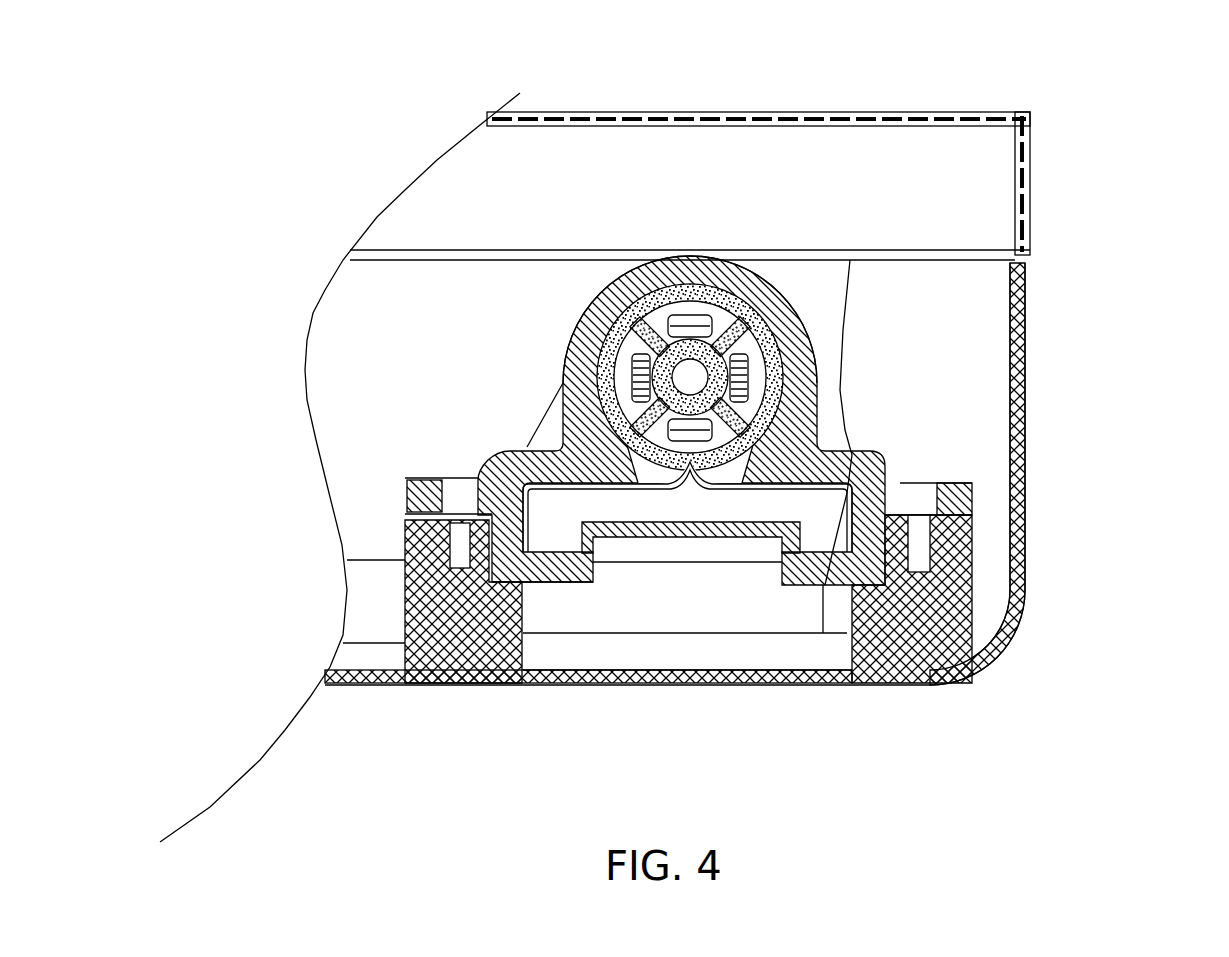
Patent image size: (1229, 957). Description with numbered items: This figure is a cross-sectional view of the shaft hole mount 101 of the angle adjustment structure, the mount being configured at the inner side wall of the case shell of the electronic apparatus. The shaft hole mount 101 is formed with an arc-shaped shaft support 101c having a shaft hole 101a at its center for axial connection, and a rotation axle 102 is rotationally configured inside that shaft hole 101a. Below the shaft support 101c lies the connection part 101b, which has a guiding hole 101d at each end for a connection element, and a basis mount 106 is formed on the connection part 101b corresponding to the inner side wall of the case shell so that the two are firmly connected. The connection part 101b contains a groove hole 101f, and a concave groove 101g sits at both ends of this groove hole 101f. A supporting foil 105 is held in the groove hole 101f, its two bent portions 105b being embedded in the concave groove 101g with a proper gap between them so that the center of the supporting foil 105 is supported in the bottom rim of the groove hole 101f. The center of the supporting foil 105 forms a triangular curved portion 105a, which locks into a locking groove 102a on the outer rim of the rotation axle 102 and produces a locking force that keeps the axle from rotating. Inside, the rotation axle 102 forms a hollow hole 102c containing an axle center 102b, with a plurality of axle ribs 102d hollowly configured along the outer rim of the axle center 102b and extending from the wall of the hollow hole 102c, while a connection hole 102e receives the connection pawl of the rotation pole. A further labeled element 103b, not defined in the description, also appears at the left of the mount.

The shaft hole mount 101 is at (870, 388).
The shaft hole 101a is at (801, 420).
The connection part 101b is at (340, 467).
The arc-shaped shaft support 101c is at (845, 311).
The guiding hole 101d is at (913, 508).
The groove hole 101f is at (687, 635).
The concave groove 101g is at (542, 659).
The rotation axle 102 is at (543, 237).
The locking groove 102a is at (687, 633).
The axle center 102b is at (671, 258).
The hollow hole 102c is at (566, 259).
The axle ribs 102d is at (760, 262).
The connection hole 102e is at (800, 335).
The left support bar 103b is at (445, 326).
The supporting foil 105 is at (691, 627).
The triangular curved portion 105a is at (700, 638).
The bent portion 105b is at (977, 653).
The basis mount 106 is at (977, 597).